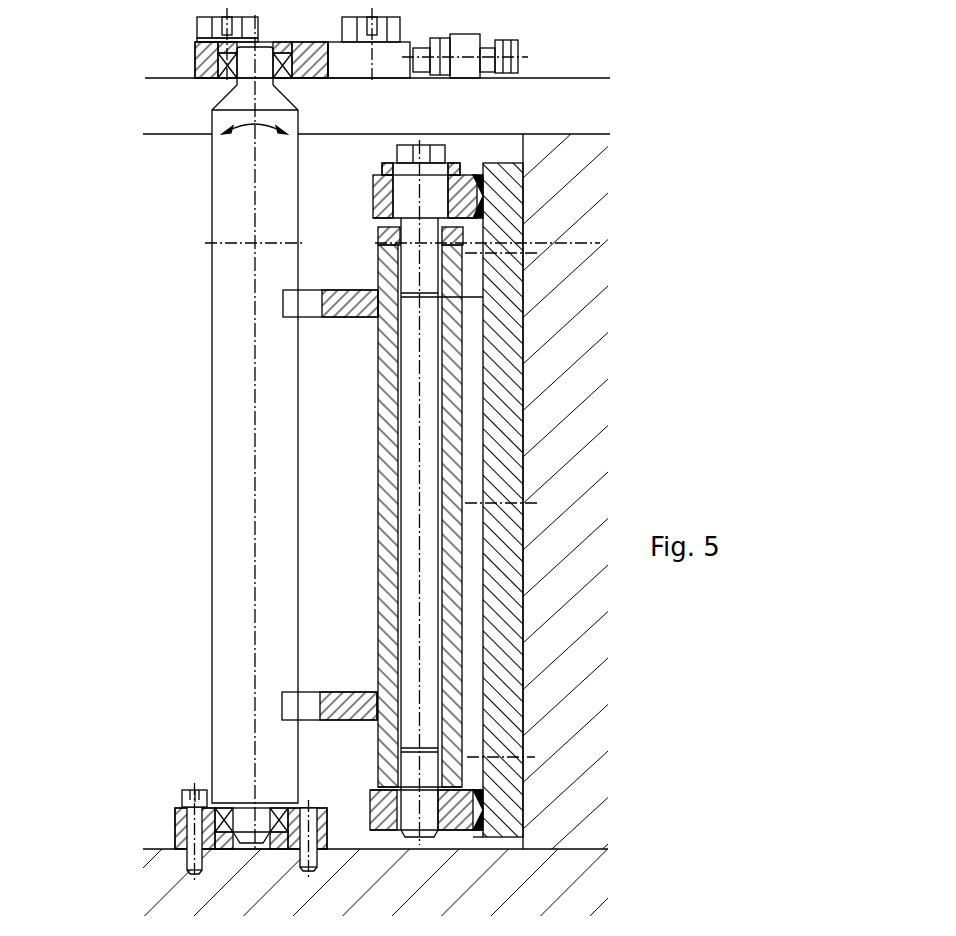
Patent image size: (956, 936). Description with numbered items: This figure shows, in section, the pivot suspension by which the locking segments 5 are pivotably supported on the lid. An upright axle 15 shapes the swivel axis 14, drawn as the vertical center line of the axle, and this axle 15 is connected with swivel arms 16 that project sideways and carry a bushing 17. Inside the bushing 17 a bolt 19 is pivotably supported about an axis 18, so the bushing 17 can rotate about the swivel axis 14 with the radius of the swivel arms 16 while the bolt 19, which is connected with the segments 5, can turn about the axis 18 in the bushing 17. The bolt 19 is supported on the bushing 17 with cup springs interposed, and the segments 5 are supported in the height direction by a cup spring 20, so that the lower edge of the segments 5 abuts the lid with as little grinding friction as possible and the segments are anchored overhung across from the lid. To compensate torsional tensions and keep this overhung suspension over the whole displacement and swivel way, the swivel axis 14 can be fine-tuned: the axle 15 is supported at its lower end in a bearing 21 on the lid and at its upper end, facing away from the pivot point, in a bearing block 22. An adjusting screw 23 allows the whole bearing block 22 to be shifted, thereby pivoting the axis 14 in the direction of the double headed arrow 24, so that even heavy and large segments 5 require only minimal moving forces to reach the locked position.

The segments 5 is at (585, 657).
The swivel axis 14 is at (253, 430).
The axle 15 is at (223, 478).
The swivel arms 16 is at (337, 288).
The bushing 17 is at (380, 417).
The axis 18 is at (417, 377).
The bolt 19 is at (375, 178).
The cup spring 20 is at (455, 228).
The bearing 21 is at (258, 803).
The bearing block 22 is at (195, 62).
The adjusting screw 23 is at (518, 48).
The double headed arrow 24 is at (242, 125).